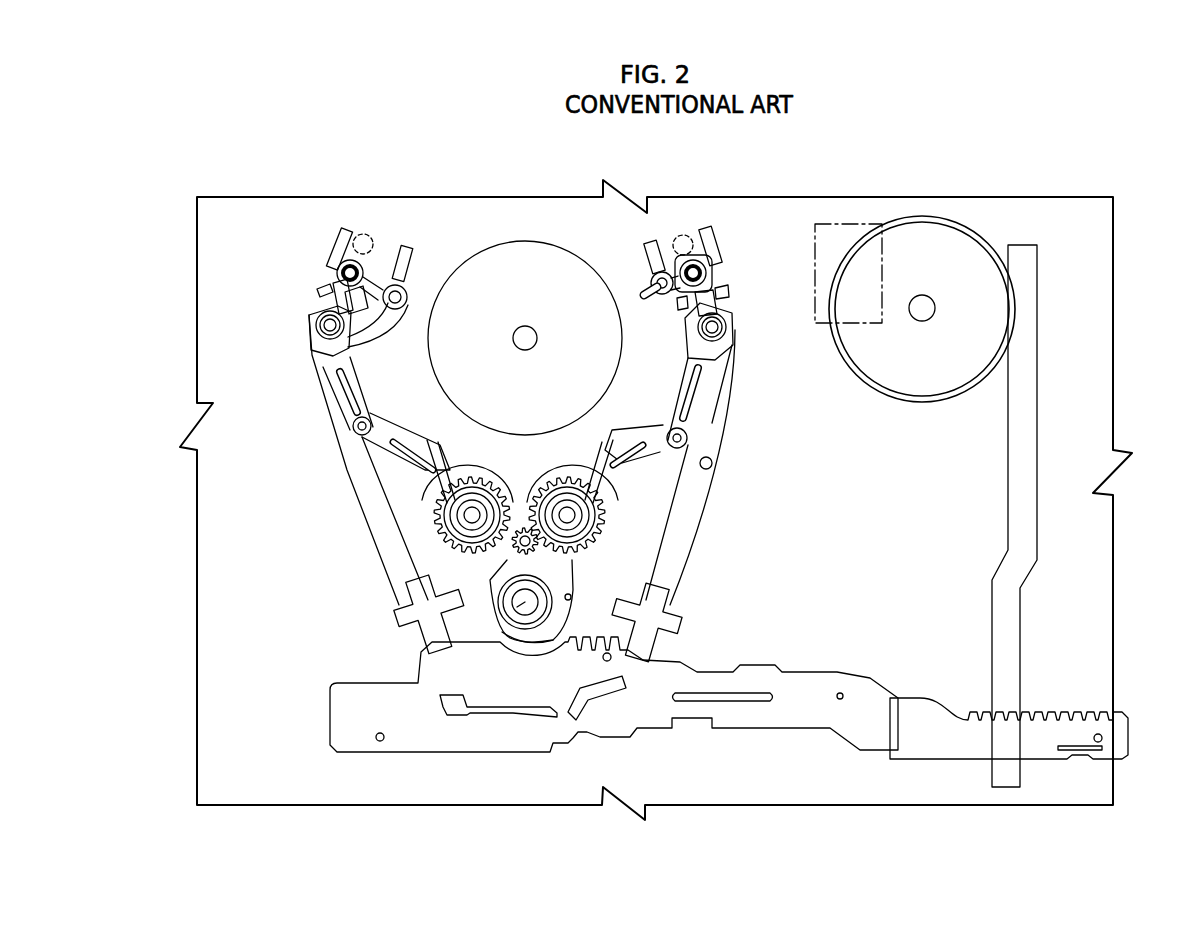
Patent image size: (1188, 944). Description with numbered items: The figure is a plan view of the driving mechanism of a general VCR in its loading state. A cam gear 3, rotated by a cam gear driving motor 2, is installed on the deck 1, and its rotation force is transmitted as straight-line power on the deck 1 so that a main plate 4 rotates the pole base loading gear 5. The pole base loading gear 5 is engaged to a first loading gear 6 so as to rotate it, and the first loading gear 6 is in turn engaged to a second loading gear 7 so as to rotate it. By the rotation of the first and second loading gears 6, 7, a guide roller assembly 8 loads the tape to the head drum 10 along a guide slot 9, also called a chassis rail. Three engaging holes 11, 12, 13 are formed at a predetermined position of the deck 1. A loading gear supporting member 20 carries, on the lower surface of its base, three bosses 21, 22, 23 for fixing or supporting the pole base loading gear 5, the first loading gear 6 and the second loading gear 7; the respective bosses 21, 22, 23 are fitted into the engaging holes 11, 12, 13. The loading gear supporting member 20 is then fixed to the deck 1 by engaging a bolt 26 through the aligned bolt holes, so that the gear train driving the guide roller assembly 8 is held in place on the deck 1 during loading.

The deck 1 is at (1095, 590).
The cam gear driving motor 2 is at (845, 224).
The cam gear 3 is at (948, 240).
The main plate 4 is at (958, 747).
The pole base loading gear 5 is at (425, 605).
The first loading gear 6 is at (612, 512).
The second loading gear 7 is at (445, 470).
The guide roller assembly 8 is at (739, 302).
The guide slot 9 is at (711, 470).
The head drum 10 is at (510, 255).
The engaging hole 11 is at (563, 585).
The engaging hole 12 is at (607, 527).
The engaging hole 13 is at (421, 535).
The loading gear supporting member 20 is at (400, 598).
The boss 21 is at (512, 580).
The boss 22 is at (594, 488).
The boss 23 is at (423, 512).
The bolt 26 is at (490, 548).